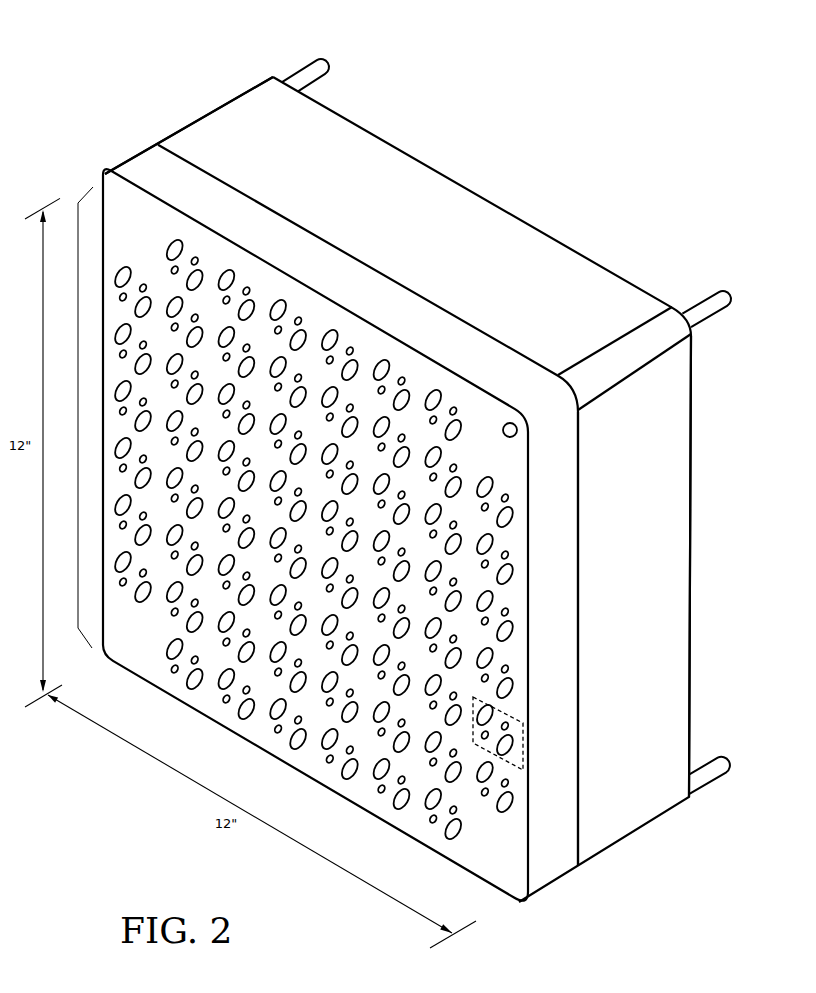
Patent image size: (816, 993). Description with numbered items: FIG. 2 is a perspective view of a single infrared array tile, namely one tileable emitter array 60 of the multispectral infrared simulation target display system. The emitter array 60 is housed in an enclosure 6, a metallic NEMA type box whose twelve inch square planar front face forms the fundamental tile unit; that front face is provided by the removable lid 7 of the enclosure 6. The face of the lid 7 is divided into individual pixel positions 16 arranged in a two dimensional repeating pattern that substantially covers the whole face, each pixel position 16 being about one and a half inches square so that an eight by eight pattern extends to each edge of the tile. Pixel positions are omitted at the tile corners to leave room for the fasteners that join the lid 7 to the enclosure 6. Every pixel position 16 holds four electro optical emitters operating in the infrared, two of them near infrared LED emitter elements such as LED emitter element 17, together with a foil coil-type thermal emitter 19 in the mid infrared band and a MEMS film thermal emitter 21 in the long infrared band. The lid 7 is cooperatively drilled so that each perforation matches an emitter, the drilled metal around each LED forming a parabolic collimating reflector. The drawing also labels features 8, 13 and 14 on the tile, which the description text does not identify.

The emitter array 60 is at (138, 82).
The enclosure 6 is at (163, 133).
The lid 7 is at (122, 200).
The front panel 8 is at (78, 378).
The housing side 13 is at (645, 627).
The mounting peg 14 is at (312, 60).
The pixel position 16 is at (523, 722).
The LED emitter element 17 is at (430, 818).
The foil coil-type thermal emitter 19 is at (428, 803).
The MEMS film thermal emitter 21 is at (448, 833).